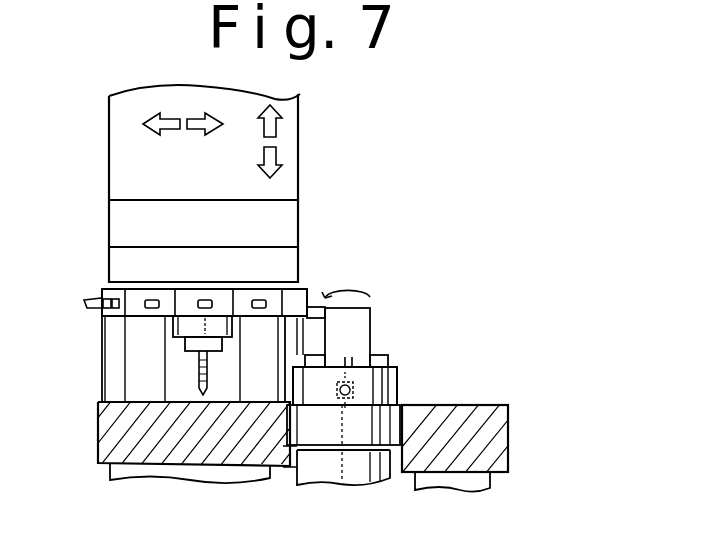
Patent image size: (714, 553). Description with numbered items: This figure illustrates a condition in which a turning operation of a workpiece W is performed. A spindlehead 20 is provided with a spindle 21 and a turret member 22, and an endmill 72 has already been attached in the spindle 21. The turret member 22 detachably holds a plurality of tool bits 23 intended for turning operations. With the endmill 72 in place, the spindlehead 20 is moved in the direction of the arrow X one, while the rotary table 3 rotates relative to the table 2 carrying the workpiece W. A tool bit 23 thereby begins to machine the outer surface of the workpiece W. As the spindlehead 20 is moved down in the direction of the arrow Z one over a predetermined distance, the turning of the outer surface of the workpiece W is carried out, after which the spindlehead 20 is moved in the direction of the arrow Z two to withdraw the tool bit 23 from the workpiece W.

The spindlehead 20 is at (297, 114).
The spindle 21 is at (176, 331).
The turret member 22 is at (300, 284).
The tool bit 23 is at (315, 290).
The workpiece W is at (372, 325).
The rotary table 3 is at (400, 403).
The table 2 is at (510, 442).
The endmill 72 is at (200, 380).